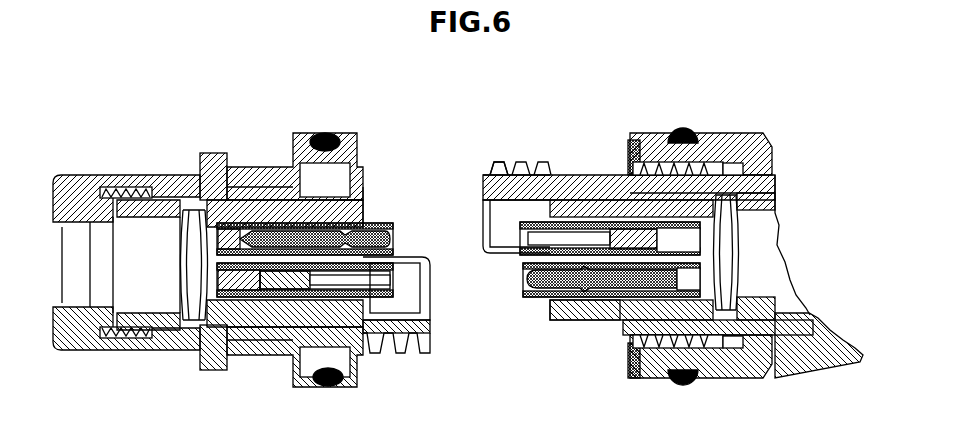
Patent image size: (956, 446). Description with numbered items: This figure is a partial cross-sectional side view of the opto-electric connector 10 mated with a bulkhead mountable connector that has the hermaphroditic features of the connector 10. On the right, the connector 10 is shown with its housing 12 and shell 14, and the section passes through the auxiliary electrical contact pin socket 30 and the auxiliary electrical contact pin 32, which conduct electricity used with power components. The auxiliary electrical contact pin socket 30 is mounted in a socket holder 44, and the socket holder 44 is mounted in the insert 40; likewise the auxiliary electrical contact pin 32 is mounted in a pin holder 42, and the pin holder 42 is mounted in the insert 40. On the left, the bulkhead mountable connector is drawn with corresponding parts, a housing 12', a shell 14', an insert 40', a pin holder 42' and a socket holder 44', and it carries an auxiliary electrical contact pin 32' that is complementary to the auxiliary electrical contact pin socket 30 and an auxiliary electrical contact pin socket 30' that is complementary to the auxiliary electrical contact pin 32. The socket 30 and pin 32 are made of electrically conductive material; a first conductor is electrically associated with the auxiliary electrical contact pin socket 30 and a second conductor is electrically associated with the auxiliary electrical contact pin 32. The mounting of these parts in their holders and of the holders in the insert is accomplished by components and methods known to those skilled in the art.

The opto-electric connector 10 is at (773, 157).
The housing 12 is at (648, 200).
The receptacle connector body 12' is at (273, 229).
The shell 14 is at (700, 219).
The mating coupling nut 14' is at (151, 221).
The auxiliary electrical contact pin socket 30 is at (490, 226).
The auxiliary electrical contact pin socket 30' is at (419, 299).
The auxiliary electrical contact pin 32 is at (593, 314).
The auxiliary electrical contact pin 32' is at (346, 223).
The insert 40 is at (492, 182).
The mating front shell sleeve 40' is at (376, 173).
The pin holder 42 is at (575, 330).
The mating insulator insert 42' is at (325, 204).
The socket holder 44 is at (573, 249).
The mating socket contact 44' is at (353, 283).